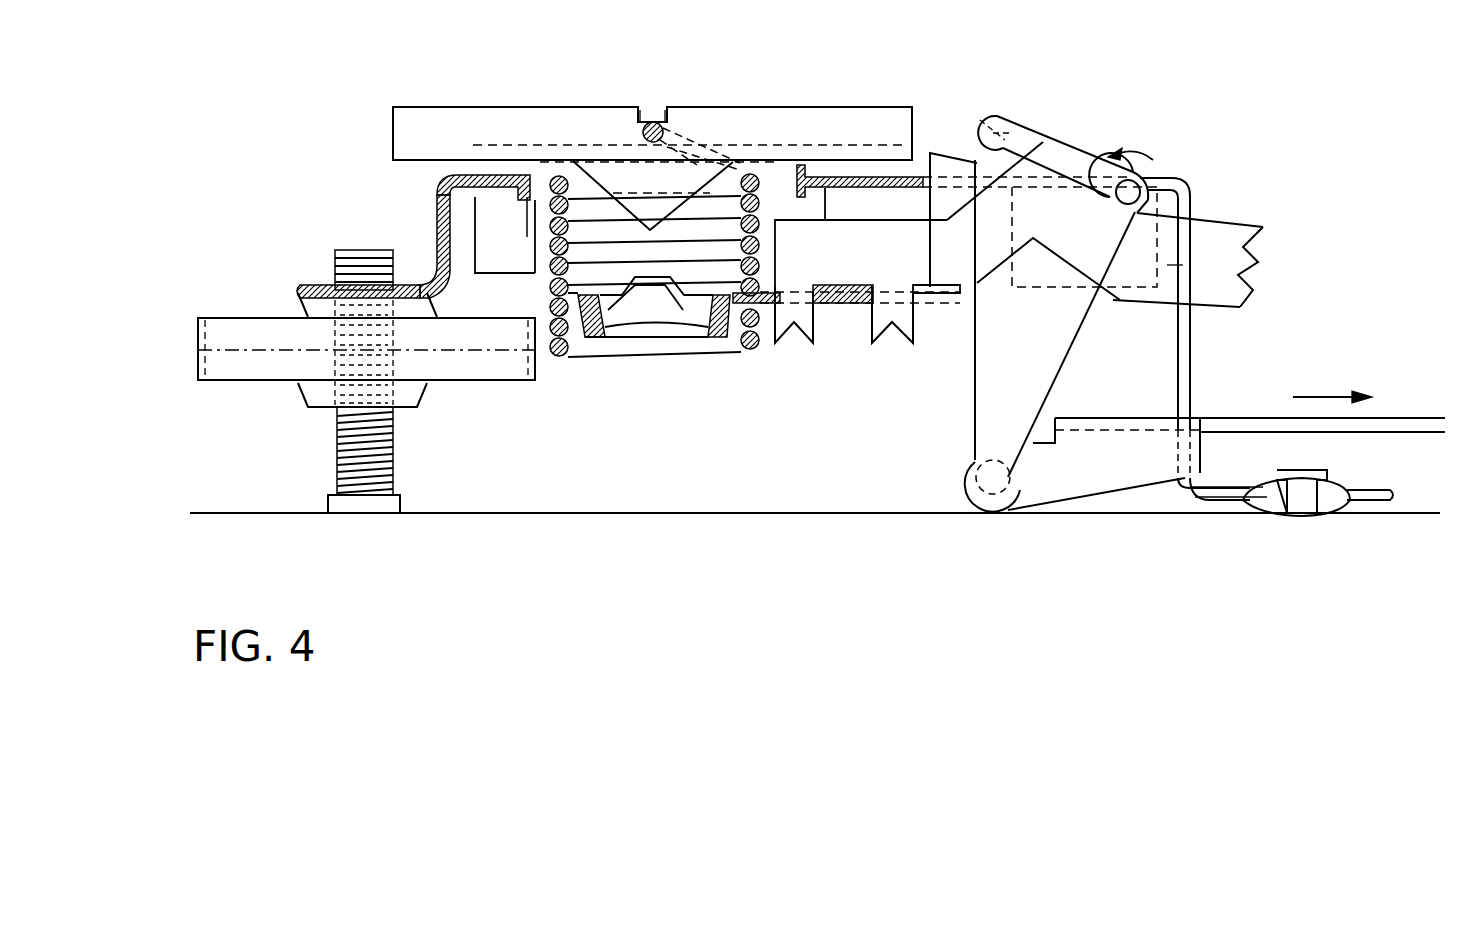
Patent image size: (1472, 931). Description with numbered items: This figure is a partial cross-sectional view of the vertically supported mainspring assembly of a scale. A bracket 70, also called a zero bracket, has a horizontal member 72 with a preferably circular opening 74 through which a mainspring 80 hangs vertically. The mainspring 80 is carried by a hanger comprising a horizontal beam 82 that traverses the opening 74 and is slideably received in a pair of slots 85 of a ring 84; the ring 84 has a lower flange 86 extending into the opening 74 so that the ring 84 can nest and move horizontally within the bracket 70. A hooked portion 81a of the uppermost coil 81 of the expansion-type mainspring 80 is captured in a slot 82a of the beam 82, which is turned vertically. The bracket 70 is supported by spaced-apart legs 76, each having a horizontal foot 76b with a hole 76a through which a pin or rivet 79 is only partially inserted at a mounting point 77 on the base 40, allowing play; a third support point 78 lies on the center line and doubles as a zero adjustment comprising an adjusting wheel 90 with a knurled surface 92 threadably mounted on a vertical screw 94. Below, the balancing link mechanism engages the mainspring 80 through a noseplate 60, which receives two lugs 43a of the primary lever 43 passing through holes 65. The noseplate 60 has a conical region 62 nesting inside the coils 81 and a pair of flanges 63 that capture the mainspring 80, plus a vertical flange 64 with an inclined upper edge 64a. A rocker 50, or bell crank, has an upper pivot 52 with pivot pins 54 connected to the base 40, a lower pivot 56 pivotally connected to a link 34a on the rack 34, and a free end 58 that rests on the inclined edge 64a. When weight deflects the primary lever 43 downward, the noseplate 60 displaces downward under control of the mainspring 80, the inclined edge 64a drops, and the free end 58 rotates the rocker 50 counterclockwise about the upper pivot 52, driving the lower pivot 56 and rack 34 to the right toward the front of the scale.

The rack 34 is at (1390, 417).
The link 34a is at (1060, 487).
The base 40 is at (735, 513).
The primary lever 43 is at (1183, 265).
The lugs 43a is at (907, 313).
The rocker 50 is at (1080, 150).
The upper pivot 52 is at (1140, 180).
The pivot pins 54 is at (1143, 177).
The lower pivot 56 is at (980, 465).
The free end 58 is at (1033, 133).
The noseplate 60 is at (940, 297).
The conical region 62 is at (713, 313).
The flanges 63 is at (650, 280).
The vertical flange 64 is at (947, 167).
The inclined upper edge 64a is at (963, 158).
The holes 65 is at (793, 300).
The bracket 70 is at (437, 192).
The horizontal member 72 is at (922, 177).
The opening 74 is at (503, 183).
The legs 76 is at (438, 240).
The hole 76a is at (1337, 490).
The foot 76b is at (303, 293).
The mounting point 77 is at (1305, 517).
The point 78 is at (362, 513).
The pins or rivets 79 is at (1310, 470).
The mainspring 80 is at (713, 347).
The coils 81 is at (547, 257).
The hooked portion 81a is at (645, 120).
The horizontal beam 82 is at (433, 115).
The slot 82a is at (658, 115).
The ring 84 is at (470, 172).
The slots 85 is at (858, 160).
The lower flange 86 is at (527, 190).
The adjusting wheel 90 is at (250, 370).
The knurled surface 92 is at (197, 337).
The vertical screw 94 is at (353, 253).